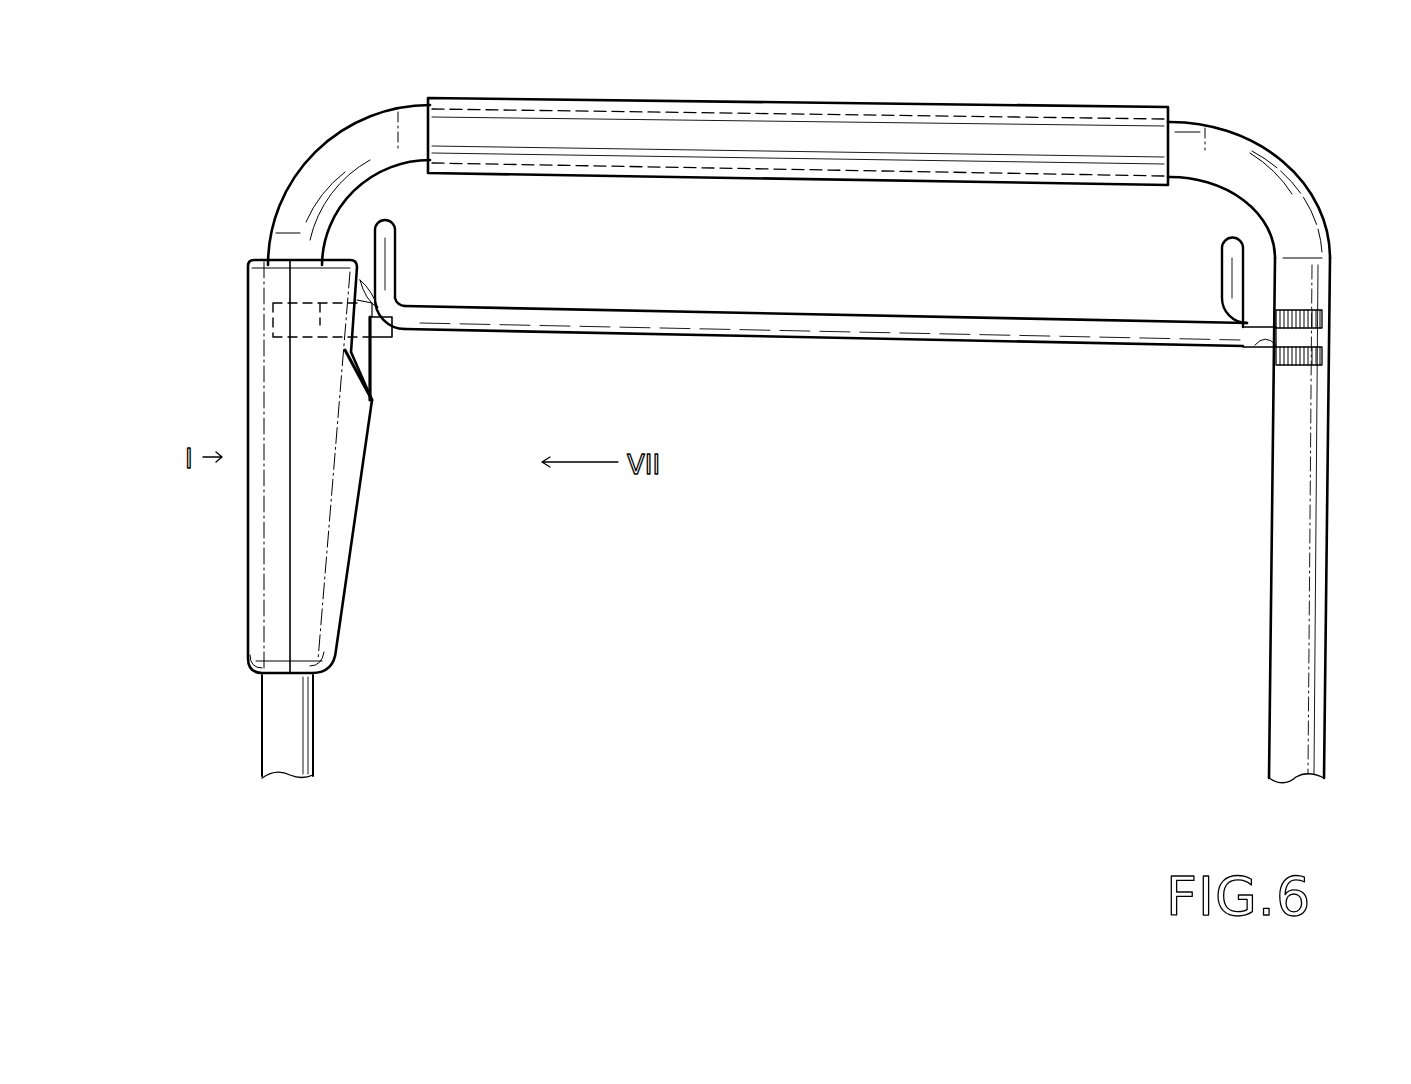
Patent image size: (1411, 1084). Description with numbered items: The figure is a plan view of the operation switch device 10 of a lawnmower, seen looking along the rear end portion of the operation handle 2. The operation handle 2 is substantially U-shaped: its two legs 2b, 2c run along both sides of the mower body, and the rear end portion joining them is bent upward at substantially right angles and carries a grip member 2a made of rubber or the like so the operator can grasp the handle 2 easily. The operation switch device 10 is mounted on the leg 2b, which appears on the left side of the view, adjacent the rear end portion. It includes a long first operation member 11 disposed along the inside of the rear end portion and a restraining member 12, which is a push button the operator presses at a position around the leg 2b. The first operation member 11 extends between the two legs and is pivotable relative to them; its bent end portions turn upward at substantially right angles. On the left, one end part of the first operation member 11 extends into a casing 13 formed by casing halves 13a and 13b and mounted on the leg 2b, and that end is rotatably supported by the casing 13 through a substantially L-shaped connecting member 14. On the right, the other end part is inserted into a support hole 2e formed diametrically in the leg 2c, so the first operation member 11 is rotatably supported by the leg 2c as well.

The operation handle 2 is at (1228, 124).
The grip member 2a is at (824, 138).
The leg 2b is at (290, 722).
The leg 2c is at (1312, 492).
The support hole 2e is at (1249, 346).
The operation switch device 10 is at (427, 510).
The first operation member 11 is at (910, 341).
The restraining member 12 is at (372, 357).
The casing 13 is at (376, 483).
The casing half 13a is at (330, 600).
The casing half 13b is at (268, 597).
The connecting member 14 is at (363, 287).